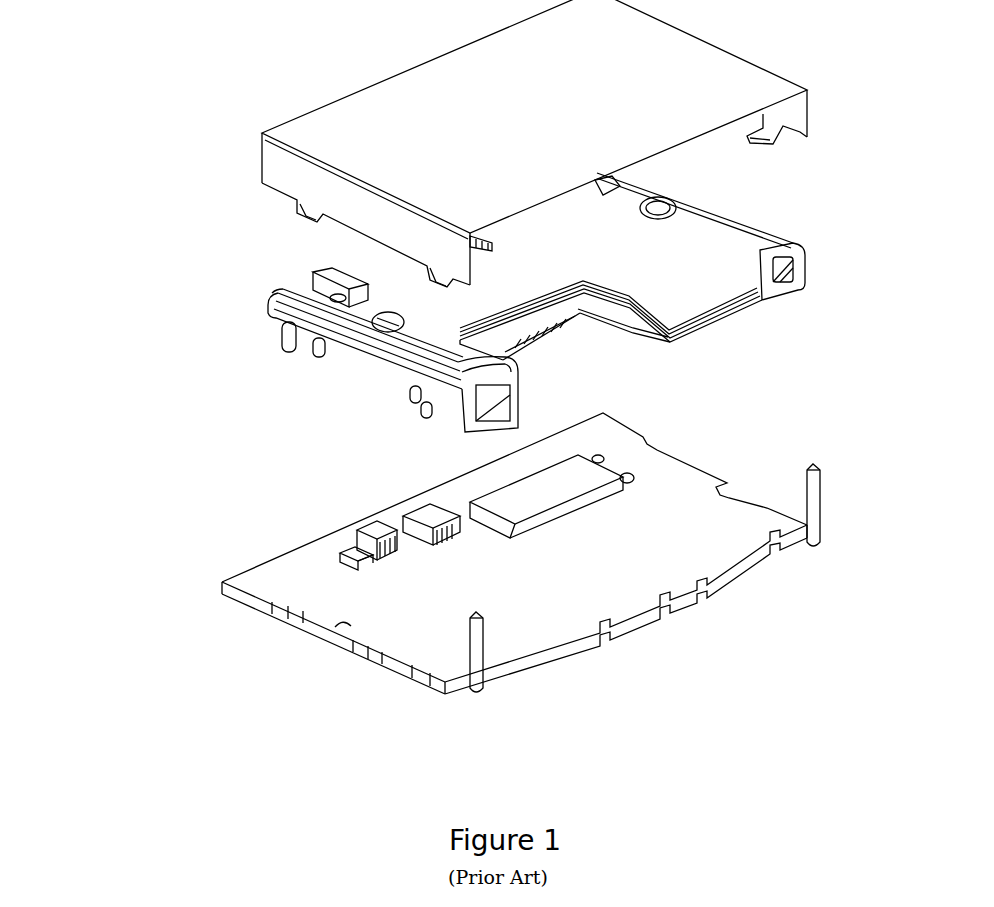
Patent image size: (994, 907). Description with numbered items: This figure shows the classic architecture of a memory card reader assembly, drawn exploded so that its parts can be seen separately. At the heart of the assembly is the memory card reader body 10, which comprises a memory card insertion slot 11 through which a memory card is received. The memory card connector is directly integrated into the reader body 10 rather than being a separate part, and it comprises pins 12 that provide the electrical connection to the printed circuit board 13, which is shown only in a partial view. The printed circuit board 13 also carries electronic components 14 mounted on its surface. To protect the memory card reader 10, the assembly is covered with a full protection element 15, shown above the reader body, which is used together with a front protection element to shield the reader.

The memory card reader body 10 is at (290, 320).
The memory card insertion slot 11 is at (720, 296).
The pins 12 is at (570, 322).
The printed circuit board 13 is at (637, 565).
The electronic components 14 is at (372, 538).
The full protection element 15 is at (260, 170).